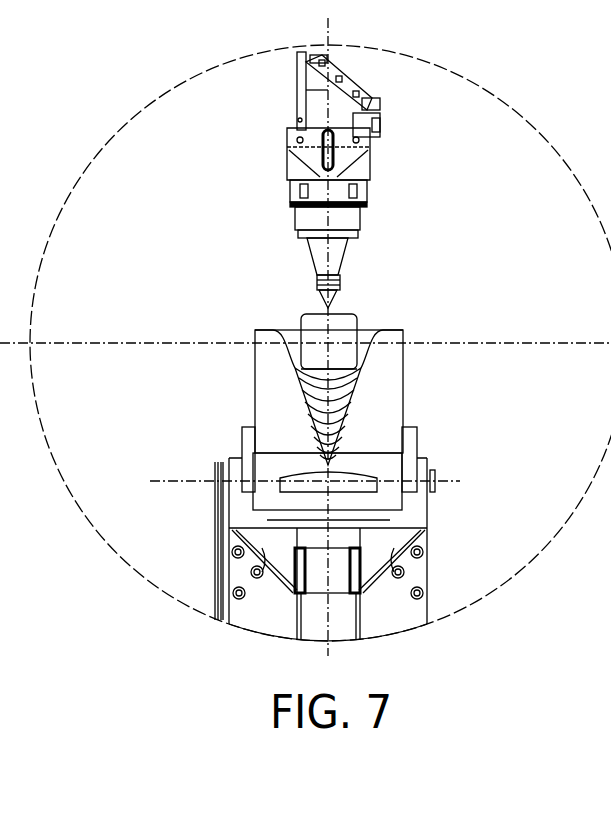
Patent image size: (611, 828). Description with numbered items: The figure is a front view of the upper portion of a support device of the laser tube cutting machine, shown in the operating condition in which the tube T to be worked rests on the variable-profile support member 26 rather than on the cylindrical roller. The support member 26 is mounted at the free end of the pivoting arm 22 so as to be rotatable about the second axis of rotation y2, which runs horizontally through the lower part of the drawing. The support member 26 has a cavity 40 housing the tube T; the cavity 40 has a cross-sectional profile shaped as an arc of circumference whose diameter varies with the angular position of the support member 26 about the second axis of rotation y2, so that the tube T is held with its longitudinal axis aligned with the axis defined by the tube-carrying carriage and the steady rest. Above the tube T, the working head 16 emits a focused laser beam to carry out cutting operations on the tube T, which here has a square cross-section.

The working head 16 is at (365, 225).
The tube T is at (352, 300).
The support member 26 is at (403, 388).
The cavity 40 is at (293, 352).
The pivoting arm 22 is at (400, 590).
The second axis of rotation y2 is at (167, 480).